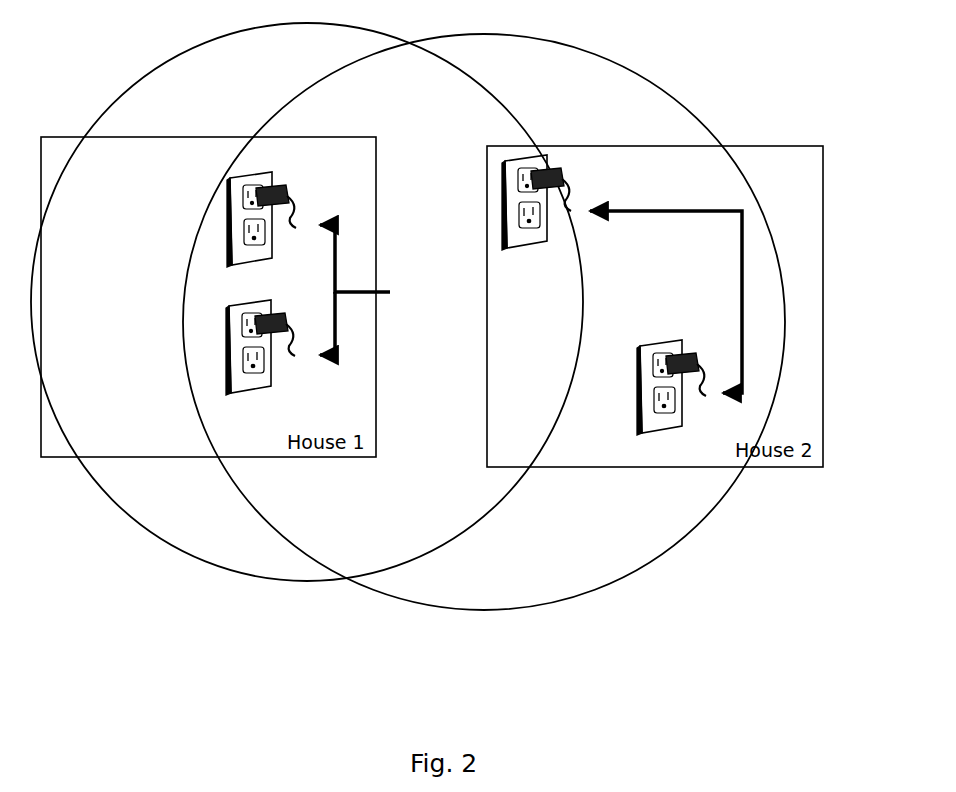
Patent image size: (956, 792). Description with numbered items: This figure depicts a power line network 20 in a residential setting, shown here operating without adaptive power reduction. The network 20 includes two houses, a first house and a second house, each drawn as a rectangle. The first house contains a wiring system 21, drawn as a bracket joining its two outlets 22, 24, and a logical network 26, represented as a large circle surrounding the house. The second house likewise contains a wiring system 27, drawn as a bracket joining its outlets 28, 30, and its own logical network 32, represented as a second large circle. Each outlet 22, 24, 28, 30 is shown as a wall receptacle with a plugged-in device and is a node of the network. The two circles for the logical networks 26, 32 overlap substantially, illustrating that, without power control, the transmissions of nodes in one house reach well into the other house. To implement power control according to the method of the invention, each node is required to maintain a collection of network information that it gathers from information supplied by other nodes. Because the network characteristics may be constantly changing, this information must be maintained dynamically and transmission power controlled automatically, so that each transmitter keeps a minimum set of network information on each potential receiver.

The power line network 20 is at (716, 73).
The wiring system 21 is at (377, 290).
The outlet 22 is at (284, 188).
The outlet 24 is at (275, 378).
The logical network 26 is at (92, 486).
The wiring system 27 is at (742, 267).
The outlet 28 is at (526, 254).
The outlet 30 is at (632, 378).
The logical network 32 is at (722, 492).